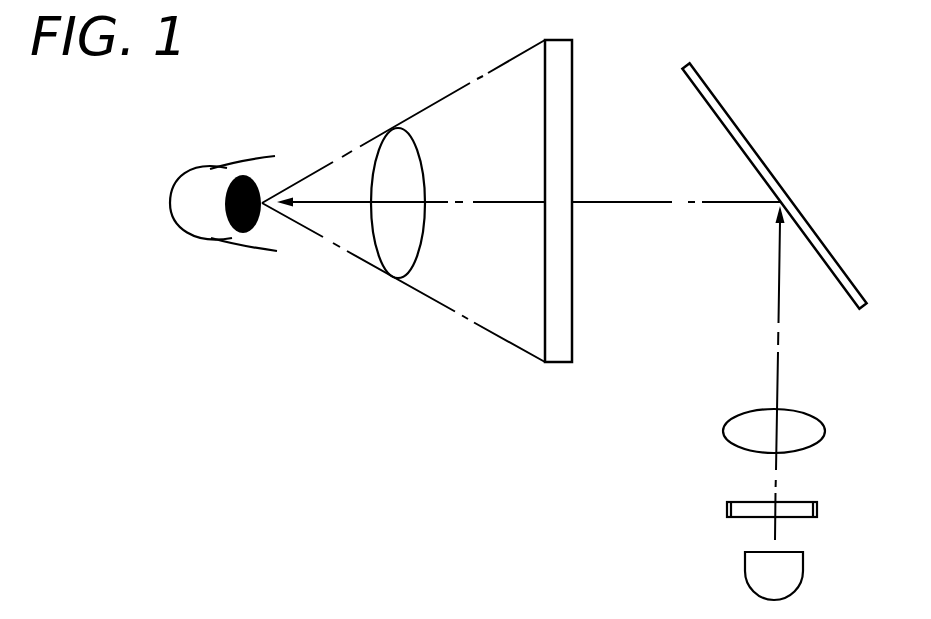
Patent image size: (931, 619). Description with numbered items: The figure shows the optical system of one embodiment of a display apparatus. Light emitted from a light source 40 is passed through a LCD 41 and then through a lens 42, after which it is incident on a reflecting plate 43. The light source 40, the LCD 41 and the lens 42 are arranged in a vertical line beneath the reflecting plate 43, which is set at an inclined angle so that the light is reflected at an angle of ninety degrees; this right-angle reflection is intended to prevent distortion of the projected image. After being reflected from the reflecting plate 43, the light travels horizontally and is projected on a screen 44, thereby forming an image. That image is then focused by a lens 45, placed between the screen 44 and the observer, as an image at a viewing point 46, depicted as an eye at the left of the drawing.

The light source 40 is at (803, 568).
The LCD 41 is at (817, 508).
The lens 42 is at (826, 430).
The reflecting plate 43 is at (847, 272).
The screen 44 is at (572, 57).
The lens 45 is at (417, 255).
The viewing point 46 is at (213, 239).